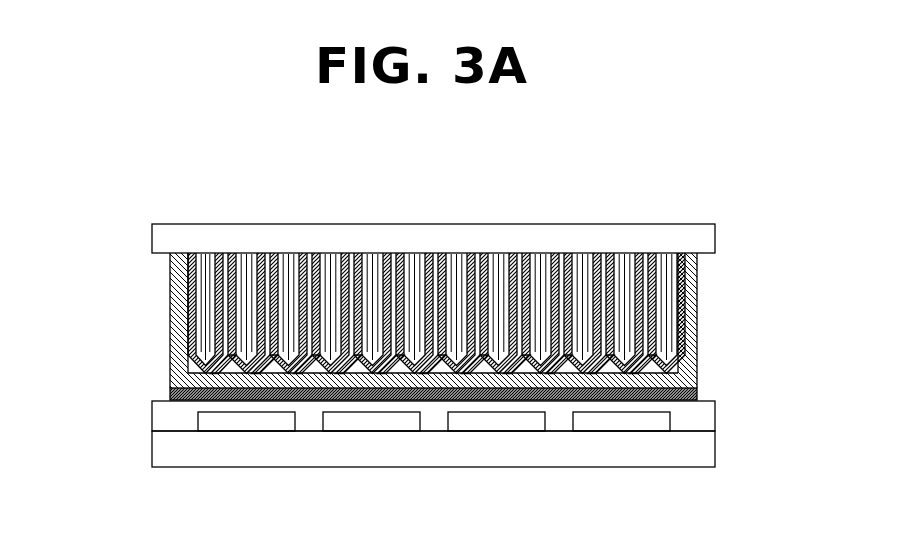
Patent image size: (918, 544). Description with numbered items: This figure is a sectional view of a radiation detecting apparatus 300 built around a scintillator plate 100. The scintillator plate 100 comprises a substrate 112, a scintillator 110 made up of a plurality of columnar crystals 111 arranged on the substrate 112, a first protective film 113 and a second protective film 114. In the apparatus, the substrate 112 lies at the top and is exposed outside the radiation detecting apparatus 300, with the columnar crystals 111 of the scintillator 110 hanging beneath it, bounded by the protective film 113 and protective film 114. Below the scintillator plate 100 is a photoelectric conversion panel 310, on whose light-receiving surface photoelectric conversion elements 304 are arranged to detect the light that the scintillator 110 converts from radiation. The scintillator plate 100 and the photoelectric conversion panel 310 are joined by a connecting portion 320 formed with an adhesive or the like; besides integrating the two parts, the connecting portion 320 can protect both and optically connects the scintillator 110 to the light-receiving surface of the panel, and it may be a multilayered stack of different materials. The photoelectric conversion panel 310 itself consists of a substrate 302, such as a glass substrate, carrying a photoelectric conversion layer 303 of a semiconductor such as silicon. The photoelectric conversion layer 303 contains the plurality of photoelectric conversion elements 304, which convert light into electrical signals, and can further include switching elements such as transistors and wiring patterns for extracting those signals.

The radiation detecting apparatus 300 is at (210, 203).
The scintillator plate 100 is at (722, 224).
The scintillator 110 is at (678, 221).
The columnar crystals 111 is at (195, 276).
The substrate 112 is at (158, 242).
The protective film 113 is at (178, 309).
The protective film 114 is at (178, 348).
The connecting portion 320 is at (178, 394).
The photoelectric conversion panel 310 is at (722, 402).
The photoelectric conversion layer 303 is at (158, 421).
The substrate 302 is at (182, 454).
The photoelectric conversion elements 304 is at (235, 426).